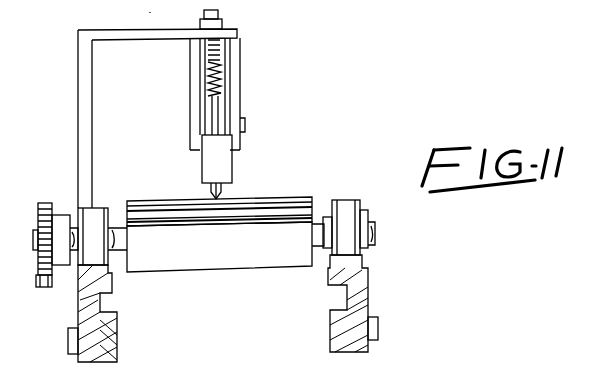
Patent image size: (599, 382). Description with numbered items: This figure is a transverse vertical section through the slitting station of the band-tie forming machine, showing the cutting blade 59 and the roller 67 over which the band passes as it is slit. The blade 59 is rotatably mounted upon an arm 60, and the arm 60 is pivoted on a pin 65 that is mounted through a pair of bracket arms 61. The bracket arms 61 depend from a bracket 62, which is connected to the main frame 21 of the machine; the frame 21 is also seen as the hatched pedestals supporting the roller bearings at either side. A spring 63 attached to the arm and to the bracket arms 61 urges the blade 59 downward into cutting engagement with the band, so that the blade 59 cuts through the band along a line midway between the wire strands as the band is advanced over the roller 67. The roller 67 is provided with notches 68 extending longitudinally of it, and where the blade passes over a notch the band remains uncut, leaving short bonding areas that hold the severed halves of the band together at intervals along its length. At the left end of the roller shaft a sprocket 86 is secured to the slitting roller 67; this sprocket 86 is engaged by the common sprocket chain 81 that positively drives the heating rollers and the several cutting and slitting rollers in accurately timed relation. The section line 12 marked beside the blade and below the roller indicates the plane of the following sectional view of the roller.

The section line 12- 12 is at (205, 77).
The frame 21 is at (78, 345).
The cutting blade 59 is at (220, 196).
The arm 60 is at (201, 173).
The bracket arms 61 is at (241, 88).
The bracket 62 is at (91, 118).
The spring 63 is at (221, 72).
The pin 65 is at (246, 131).
The roller 67 is at (277, 270).
The notches 68 is at (270, 220).
The sprocket chain 81 is at (40, 287).
The sprocket 86 is at (45, 203).